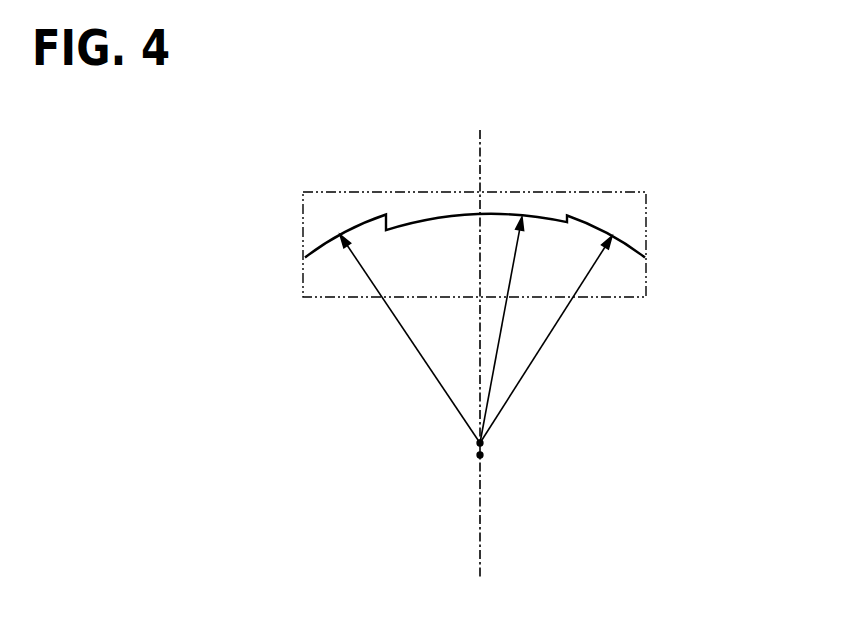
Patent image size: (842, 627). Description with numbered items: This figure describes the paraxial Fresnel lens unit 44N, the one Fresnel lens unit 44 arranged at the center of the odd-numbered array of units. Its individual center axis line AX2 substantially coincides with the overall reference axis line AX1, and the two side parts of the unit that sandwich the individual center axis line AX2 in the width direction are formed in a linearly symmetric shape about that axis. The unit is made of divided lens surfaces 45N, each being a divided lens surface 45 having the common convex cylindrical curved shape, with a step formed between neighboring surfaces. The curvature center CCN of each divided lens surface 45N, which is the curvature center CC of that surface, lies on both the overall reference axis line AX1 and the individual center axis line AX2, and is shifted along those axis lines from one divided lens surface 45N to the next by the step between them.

The Fresnel lens unit 44 is at (409, 244).
The paraxial Fresnel lens unit 44N is at (303, 208).
The divided lens surface 45 is at (477, 172).
The divided lens surface of the paraxial Fresnel lens unit 45N is at (439, 214).
The curvature center CC is at (476, 361).
The curvature center of the divided lens surface of the paraxial Fresnel lens unit CCN is at (478, 443).
The overall reference axis line AX1 is at (553, 354).
The individual center axis line AX2 is at (482, 520).